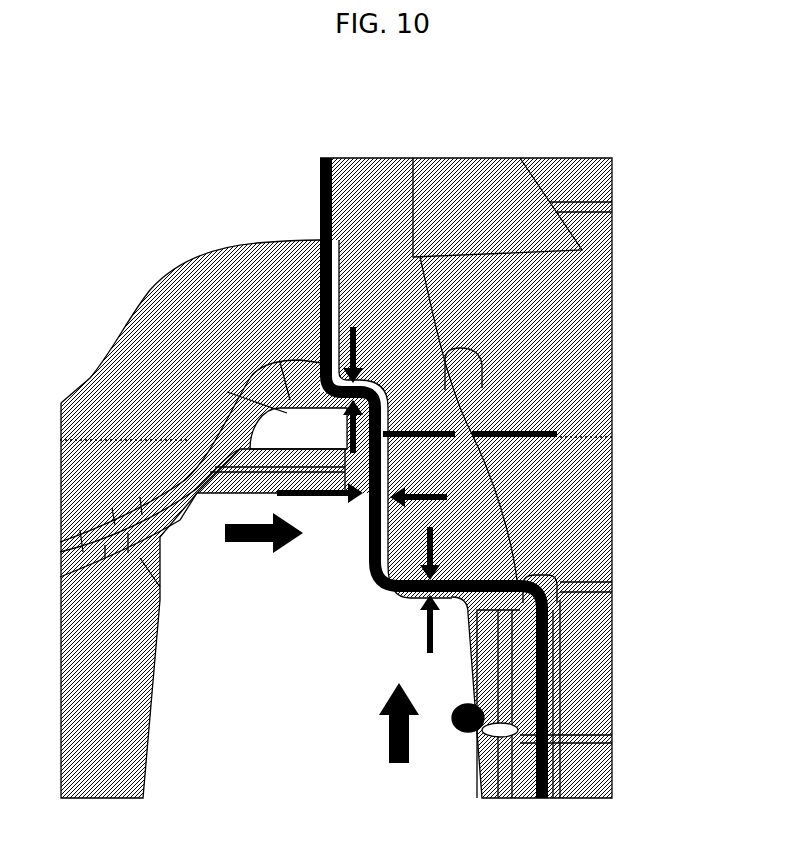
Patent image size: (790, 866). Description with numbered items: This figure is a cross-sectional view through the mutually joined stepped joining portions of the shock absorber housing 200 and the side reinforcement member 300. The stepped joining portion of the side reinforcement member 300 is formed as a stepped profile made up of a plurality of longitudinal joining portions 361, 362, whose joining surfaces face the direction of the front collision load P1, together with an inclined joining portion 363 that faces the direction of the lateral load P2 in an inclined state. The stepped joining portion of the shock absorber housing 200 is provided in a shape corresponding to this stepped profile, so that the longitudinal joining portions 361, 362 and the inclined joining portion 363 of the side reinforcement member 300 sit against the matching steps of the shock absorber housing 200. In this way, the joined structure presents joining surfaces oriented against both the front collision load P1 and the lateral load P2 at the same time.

The shock absorber housing 200 is at (143, 288).
The side reinforcement member 300 is at (614, 305).
The longitudinal joining portion 361 is at (462, 585).
The longitudinal joining portion 362 is at (372, 384).
The inclined joining portion 363 is at (390, 468).
The front collision load P1 is at (390, 742).
The lateral load P2 is at (238, 543).